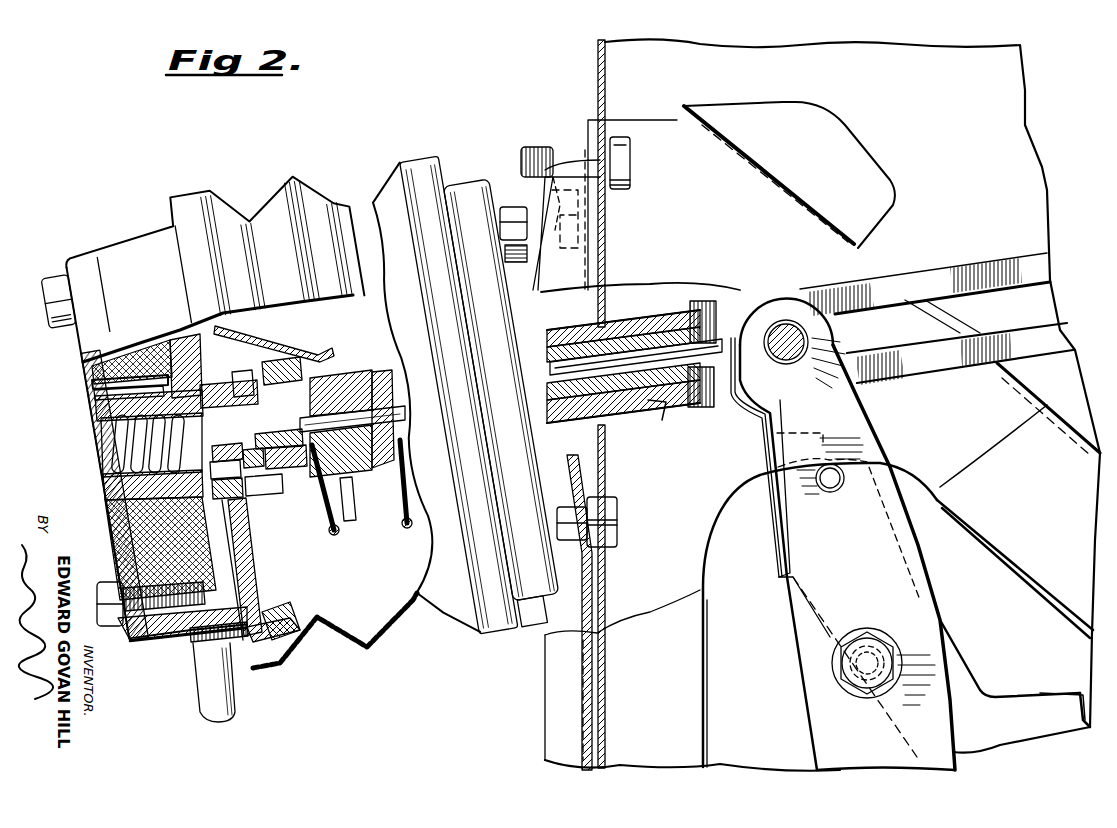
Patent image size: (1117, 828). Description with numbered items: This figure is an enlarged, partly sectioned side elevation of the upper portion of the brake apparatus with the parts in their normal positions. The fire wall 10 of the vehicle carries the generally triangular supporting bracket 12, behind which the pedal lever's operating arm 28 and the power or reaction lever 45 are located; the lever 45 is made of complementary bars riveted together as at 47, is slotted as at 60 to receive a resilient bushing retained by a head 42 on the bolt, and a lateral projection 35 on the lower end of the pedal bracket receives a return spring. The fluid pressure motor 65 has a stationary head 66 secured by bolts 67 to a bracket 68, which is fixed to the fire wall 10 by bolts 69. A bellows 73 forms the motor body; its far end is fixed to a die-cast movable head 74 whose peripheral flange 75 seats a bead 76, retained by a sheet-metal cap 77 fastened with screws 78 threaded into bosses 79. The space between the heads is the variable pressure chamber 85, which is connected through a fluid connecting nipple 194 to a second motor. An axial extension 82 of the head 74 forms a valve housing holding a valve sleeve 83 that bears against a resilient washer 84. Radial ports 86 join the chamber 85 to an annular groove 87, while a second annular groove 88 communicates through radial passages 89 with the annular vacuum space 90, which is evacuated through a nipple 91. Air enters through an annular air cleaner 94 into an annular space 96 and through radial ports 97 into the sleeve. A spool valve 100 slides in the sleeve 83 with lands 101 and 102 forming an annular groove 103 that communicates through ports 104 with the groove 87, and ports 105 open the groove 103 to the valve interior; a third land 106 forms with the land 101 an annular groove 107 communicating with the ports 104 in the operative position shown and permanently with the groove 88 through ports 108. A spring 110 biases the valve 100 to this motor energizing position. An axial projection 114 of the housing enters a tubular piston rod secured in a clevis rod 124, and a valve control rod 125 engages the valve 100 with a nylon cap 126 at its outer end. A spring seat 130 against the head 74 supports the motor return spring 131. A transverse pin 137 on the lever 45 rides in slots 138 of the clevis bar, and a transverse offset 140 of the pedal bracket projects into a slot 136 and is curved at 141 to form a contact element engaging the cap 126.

The fire wall 10 is at (600, 72).
The supporting bracket 12 is at (1068, 407).
The operating arm 28 is at (962, 652).
The lateral projection 35 is at (1035, 700).
The head 42 is at (878, 672).
The power or reaction lever 45 is at (884, 462).
The rivet 47 is at (825, 490).
The slot 60 is at (862, 630).
The fluid pressure motor 65 is at (211, 188).
The stationary head 66 is at (475, 182).
The bolts 67 is at (505, 225).
The bracket 68 is at (580, 478).
The bolts 69 is at (540, 150).
The bellows 73 is at (340, 648).
The movable head 74 is at (250, 585).
The peripheral flange 75 is at (288, 624).
The bead 76 is at (298, 638).
The sheet-metal cap 77 is at (168, 640).
The screws 78 is at (44, 303).
The bosses 79 is at (122, 592).
The axial extension 82 is at (340, 474).
The valve sleeve 83 is at (280, 355).
The resilient washer 84 is at (362, 372).
The variable pressure chamber 85 is at (395, 603).
The radial ports 86 is at (248, 338).
The annular groove 87 is at (235, 378).
The second annular groove 88 is at (190, 385).
The radial passages 89 is at (232, 575).
The annular vacuum space 90 is at (212, 645).
The nipple 91 is at (195, 684).
The annular air cleaner 94 is at (100, 373).
The annular space 96 is at (100, 402).
The radial ports 97 is at (152, 503).
The spool valve 100 is at (178, 420).
The land 101 is at (226, 450).
The land 102 is at (268, 440).
The annular groove 103 is at (298, 498).
The ports 104 is at (250, 458).
The ports 105 is at (286, 456).
The third land 106 is at (222, 468).
The annular groove 107 is at (262, 484).
The ports 108 is at (228, 488).
The spring 110 is at (112, 452).
The axial projection 114 is at (420, 378).
The clevis rod 124 is at (626, 325).
The valve control rod 125 is at (655, 410).
The cap 126 is at (712, 320).
The spring seat 130 is at (345, 486).
The motor return spring 131 is at (408, 525).
The slot 136 is at (940, 285).
The transverse pin 137 is at (795, 322).
The slots 138 is at (1040, 290).
The transverse offset 140 is at (785, 548).
The curved contact element 141 is at (740, 315).
The fluid connecting nipple 194 is at (527, 630).